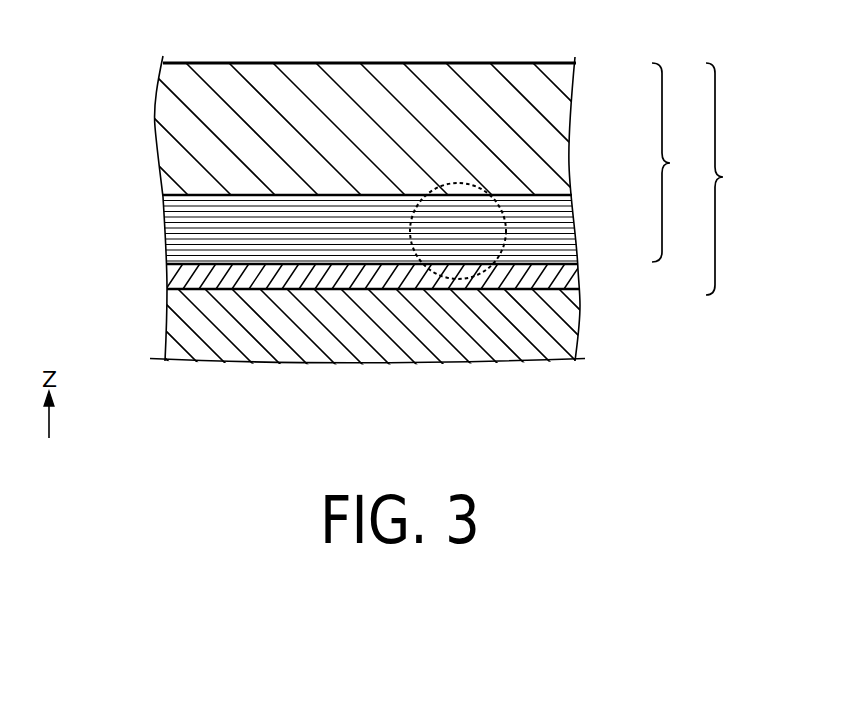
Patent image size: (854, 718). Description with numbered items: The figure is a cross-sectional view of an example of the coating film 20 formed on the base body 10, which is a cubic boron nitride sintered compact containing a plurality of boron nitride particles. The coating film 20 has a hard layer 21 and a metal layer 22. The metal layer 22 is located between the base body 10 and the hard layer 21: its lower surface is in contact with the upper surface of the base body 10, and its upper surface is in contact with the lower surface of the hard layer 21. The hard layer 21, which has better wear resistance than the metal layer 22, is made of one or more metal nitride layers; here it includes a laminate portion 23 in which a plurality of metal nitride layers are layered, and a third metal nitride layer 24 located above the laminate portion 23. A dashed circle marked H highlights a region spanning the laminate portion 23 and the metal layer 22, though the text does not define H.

The base body 10 is at (362, 330).
The coating film 20 is at (733, 179).
The hard layer 21 is at (680, 162).
The metal layer 22 is at (580, 285).
The laminate portion 23 is at (574, 235).
The third metal nitride layer 24 is at (571, 117).
The region H is at (462, 183).